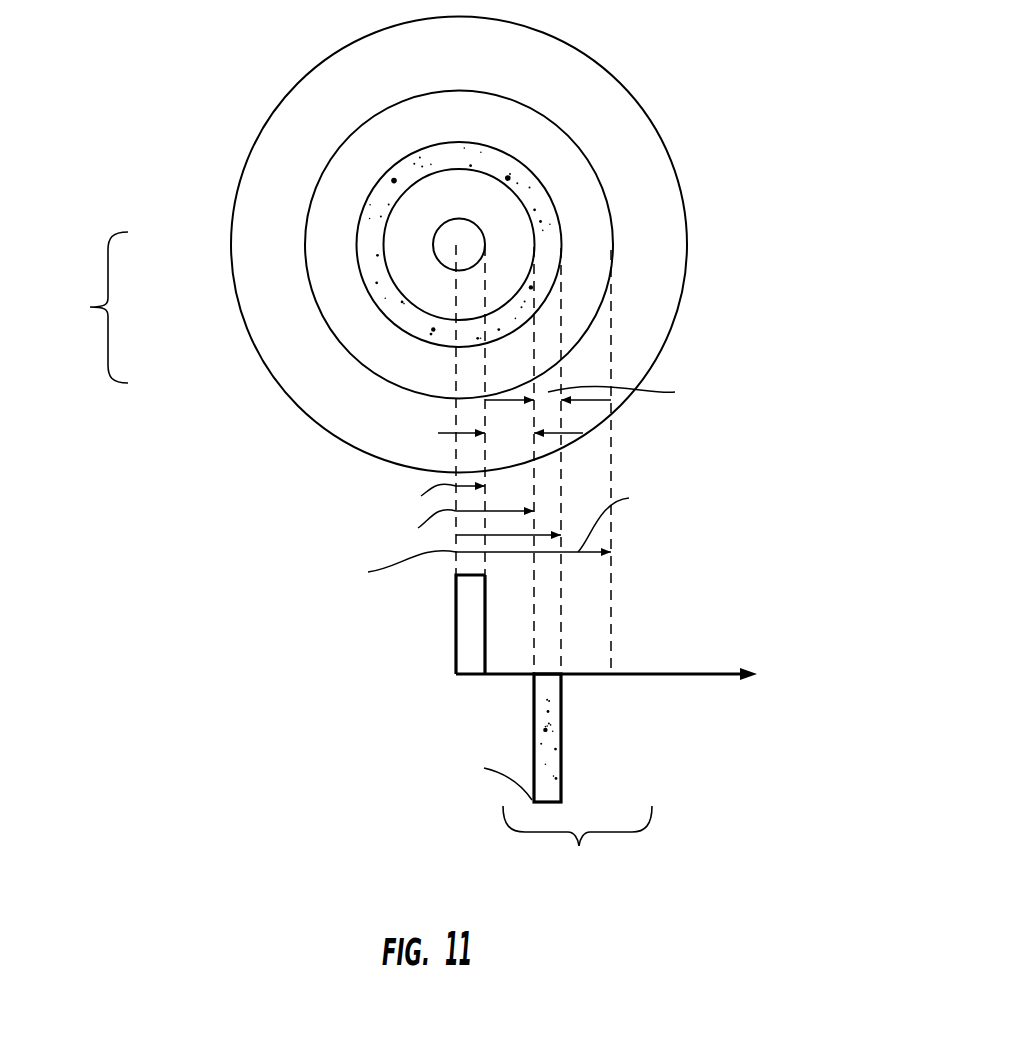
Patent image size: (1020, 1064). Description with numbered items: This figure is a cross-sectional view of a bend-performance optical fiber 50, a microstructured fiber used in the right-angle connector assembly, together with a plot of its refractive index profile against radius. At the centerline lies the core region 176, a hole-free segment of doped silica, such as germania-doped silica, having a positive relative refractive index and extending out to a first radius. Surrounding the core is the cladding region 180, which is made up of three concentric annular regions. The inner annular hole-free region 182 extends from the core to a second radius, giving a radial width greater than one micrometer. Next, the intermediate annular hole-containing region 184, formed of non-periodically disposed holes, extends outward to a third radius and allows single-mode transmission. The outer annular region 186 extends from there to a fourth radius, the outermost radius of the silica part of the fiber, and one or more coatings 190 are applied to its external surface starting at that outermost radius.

The bend-performance optical fiber 50 is at (750, 126).
The core region 176 is at (450, 258).
The cladding region 180 is at (349, 560).
The inner annular hole-free region 182 is at (403, 247).
The intermediate annular hole-containing region 184 is at (369, 245).
The outer annular region 186 is at (327, 233).
The coatings 190 is at (660, 258).